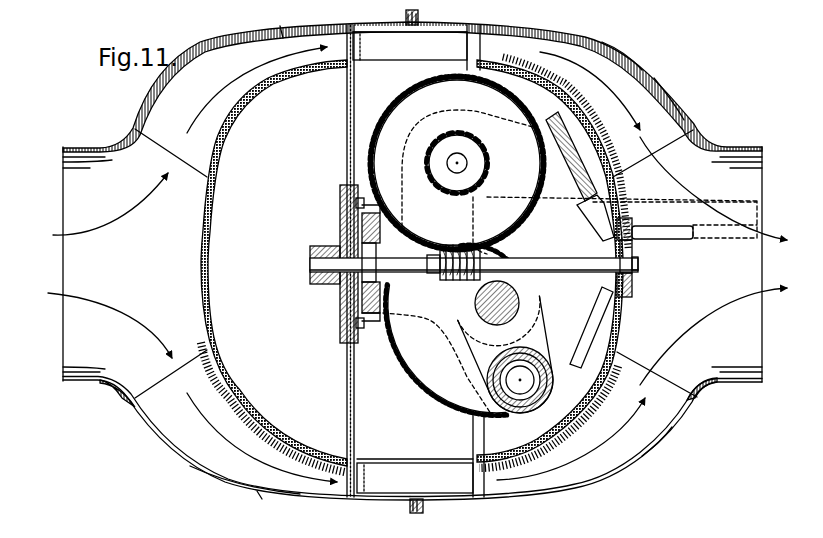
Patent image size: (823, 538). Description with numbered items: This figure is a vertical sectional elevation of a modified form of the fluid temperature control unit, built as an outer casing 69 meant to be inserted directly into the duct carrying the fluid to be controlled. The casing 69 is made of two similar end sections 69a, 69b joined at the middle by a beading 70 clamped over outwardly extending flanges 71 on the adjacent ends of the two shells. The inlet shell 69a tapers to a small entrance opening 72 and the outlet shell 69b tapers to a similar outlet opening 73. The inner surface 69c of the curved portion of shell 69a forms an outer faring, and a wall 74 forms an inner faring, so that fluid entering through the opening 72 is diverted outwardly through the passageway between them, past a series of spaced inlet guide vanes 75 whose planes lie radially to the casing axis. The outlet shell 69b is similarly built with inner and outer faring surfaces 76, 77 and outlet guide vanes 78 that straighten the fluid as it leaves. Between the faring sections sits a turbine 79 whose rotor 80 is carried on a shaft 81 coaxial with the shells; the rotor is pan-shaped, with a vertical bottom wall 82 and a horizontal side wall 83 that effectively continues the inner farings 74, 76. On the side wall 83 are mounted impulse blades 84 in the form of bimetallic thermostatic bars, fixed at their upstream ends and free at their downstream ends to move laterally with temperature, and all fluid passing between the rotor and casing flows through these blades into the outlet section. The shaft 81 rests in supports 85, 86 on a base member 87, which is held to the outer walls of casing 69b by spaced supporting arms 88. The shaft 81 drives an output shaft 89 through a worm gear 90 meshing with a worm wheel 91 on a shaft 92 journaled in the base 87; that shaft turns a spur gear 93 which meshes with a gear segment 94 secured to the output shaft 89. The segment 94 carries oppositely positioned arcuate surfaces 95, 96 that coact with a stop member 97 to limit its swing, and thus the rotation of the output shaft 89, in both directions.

The outer casing 69 is at (234, 34).
The end section 69a is at (170, 455).
The end section 69b is at (601, 485).
The inner surface 69c is at (205, 471).
The beading 70 is at (422, 510).
The flanges 71 is at (415, 508).
The entrance opening 72 is at (63, 158).
The outlet opening 73 is at (762, 167).
The wall 74 is at (234, 128).
The inlet guide vanes 75 is at (268, 258).
The inner faring surface 76 is at (603, 152).
The outer faring surface 77 is at (670, 110).
The outlet guide vanes 78 is at (634, 84).
The turbine 79 is at (472, 50).
The rotor 80 is at (348, 96).
The shaft 81 is at (322, 284).
The bottom wall 82 is at (352, 410).
The side wall 83 is at (384, 460).
The impulse blades 84 is at (440, 38).
The support 85 is at (385, 325).
The support 86 is at (614, 308).
The base member 87 is at (547, 118).
The supporting arms 88 is at (722, 204).
The output shaft 89 is at (519, 305).
The worm gear 90 is at (448, 280).
The worm wheel 91 is at (508, 228).
The shaft 92 is at (467, 163).
The spur gear 93 is at (455, 130).
The gear segment 94 is at (460, 404).
The arcuate surface 95 is at (497, 240).
The arcuate surface 96 is at (500, 344).
The stop member 97 is at (538, 360).